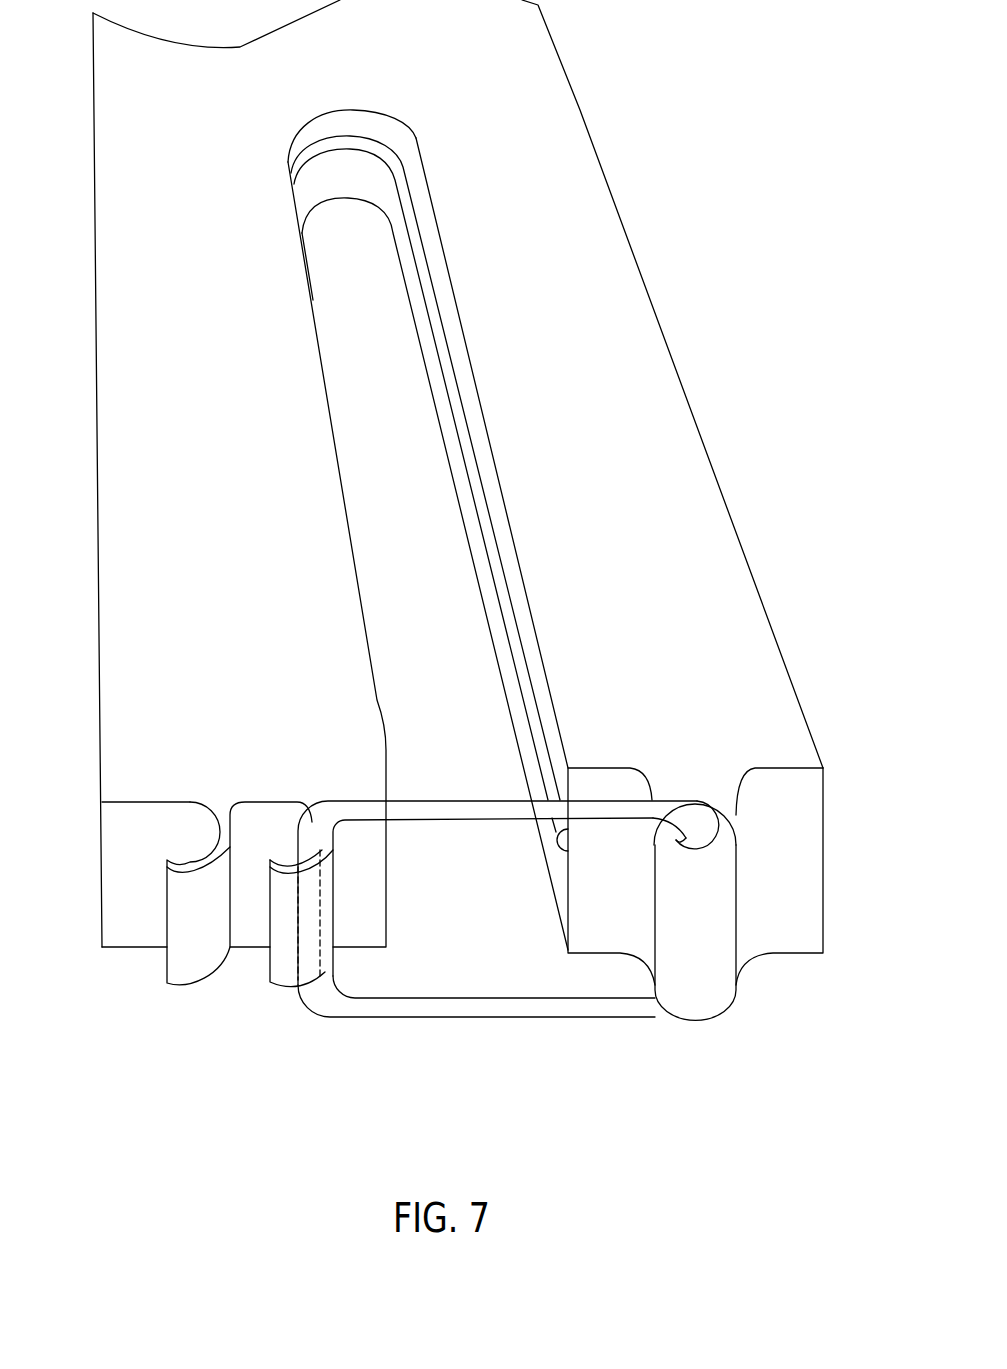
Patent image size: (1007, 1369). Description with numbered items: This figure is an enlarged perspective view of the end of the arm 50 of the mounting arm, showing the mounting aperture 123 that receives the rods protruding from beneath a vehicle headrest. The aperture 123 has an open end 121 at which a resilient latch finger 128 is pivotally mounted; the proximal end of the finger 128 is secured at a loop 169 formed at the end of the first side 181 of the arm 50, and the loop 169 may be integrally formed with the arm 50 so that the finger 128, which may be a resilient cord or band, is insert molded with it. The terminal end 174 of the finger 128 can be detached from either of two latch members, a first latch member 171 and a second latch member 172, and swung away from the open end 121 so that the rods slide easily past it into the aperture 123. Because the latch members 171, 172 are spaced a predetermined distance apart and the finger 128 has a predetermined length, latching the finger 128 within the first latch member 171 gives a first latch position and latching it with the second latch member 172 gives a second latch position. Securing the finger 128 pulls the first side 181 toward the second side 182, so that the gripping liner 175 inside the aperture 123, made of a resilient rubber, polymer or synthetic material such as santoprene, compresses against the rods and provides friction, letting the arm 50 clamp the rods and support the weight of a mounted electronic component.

The arm 50 is at (645, 263).
The open end 121 is at (560, 875).
The mounting aperture 123 is at (443, 433).
The resilient latch finger 128 is at (508, 947).
The loop 169 is at (747, 930).
The first latch member 171 is at (308, 967).
The second latch member 172 is at (173, 963).
The terminal end 174 is at (323, 1003).
The gripping liner 175 is at (483, 525).
The first side 181 is at (620, 494).
The second side 182 is at (258, 524).